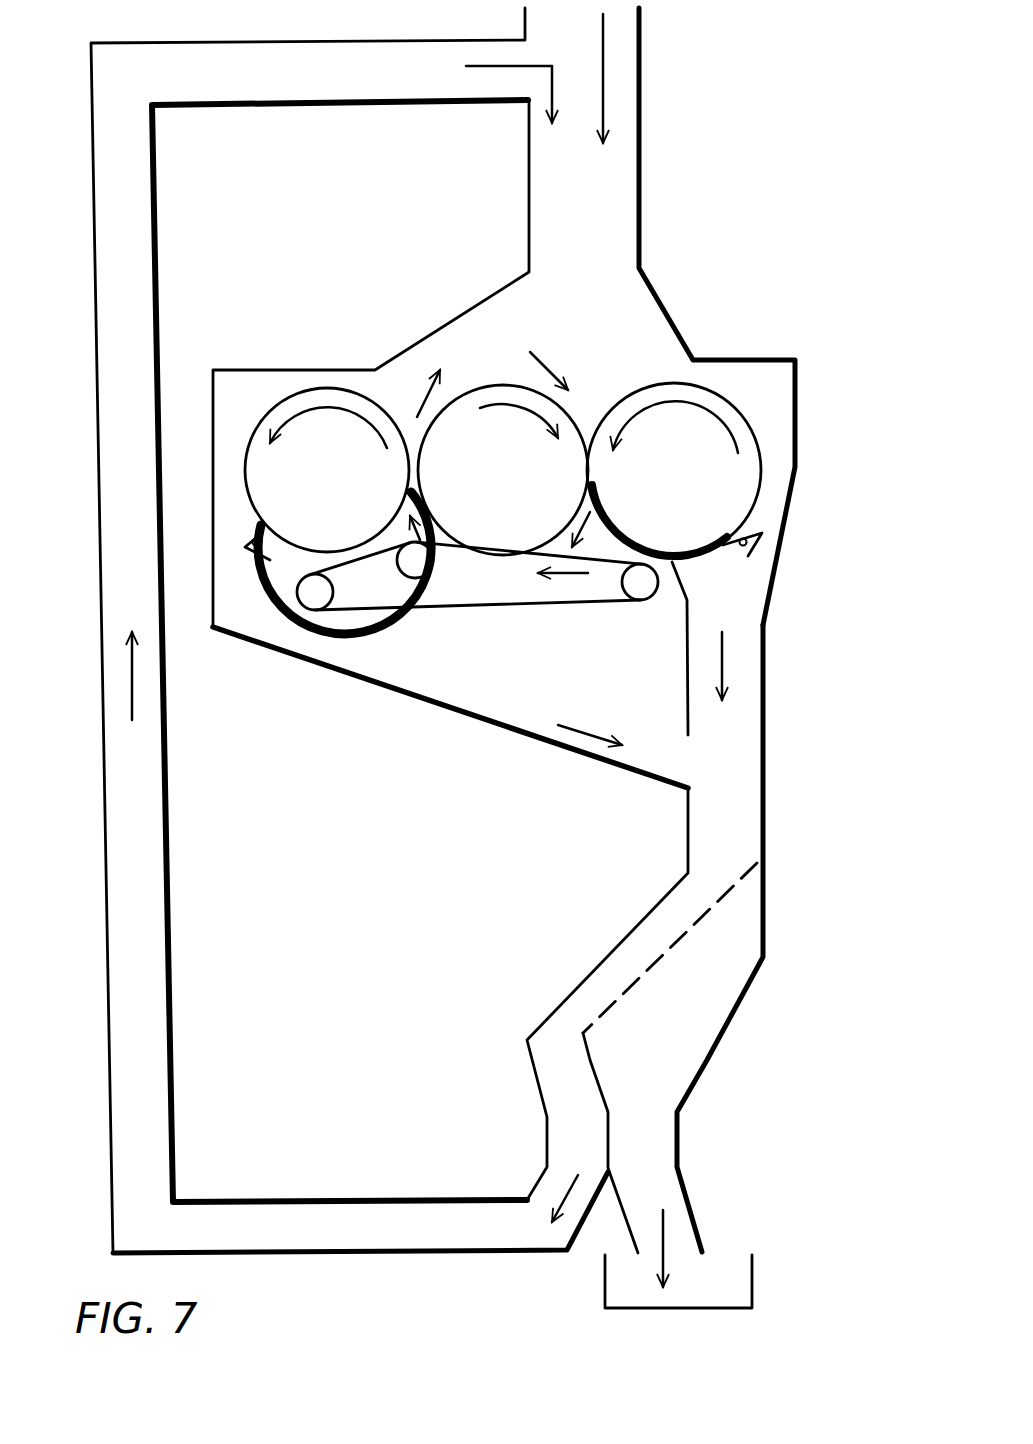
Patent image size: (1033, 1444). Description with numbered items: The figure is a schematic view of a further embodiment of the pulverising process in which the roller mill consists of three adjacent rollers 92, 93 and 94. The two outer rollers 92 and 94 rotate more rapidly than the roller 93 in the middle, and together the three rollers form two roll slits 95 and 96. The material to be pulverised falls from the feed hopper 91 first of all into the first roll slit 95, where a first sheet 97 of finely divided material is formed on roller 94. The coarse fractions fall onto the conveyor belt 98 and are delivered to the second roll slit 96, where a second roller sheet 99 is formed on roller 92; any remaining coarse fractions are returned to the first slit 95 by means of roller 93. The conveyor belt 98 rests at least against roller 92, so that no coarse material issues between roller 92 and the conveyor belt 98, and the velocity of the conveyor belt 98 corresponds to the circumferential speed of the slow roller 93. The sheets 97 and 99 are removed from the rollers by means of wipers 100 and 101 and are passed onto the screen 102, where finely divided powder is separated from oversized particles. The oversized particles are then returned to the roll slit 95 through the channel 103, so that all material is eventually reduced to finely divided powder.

The feed hopper 91 is at (626, 52).
The outer roller 92 is at (258, 494).
The middle roller 93 is at (458, 410).
The outer roller 94 is at (745, 487).
The first roll slit 95 is at (588, 440).
The second roll slit 96 is at (397, 535).
The first sheet 97 is at (700, 557).
The conveyor belt 98 is at (482, 608).
The second roller sheet 99 is at (270, 400).
The wiper 100 is at (755, 547).
The wiper 101 is at (250, 550).
The screen 102 is at (668, 948).
The channel 103 is at (412, 1228).